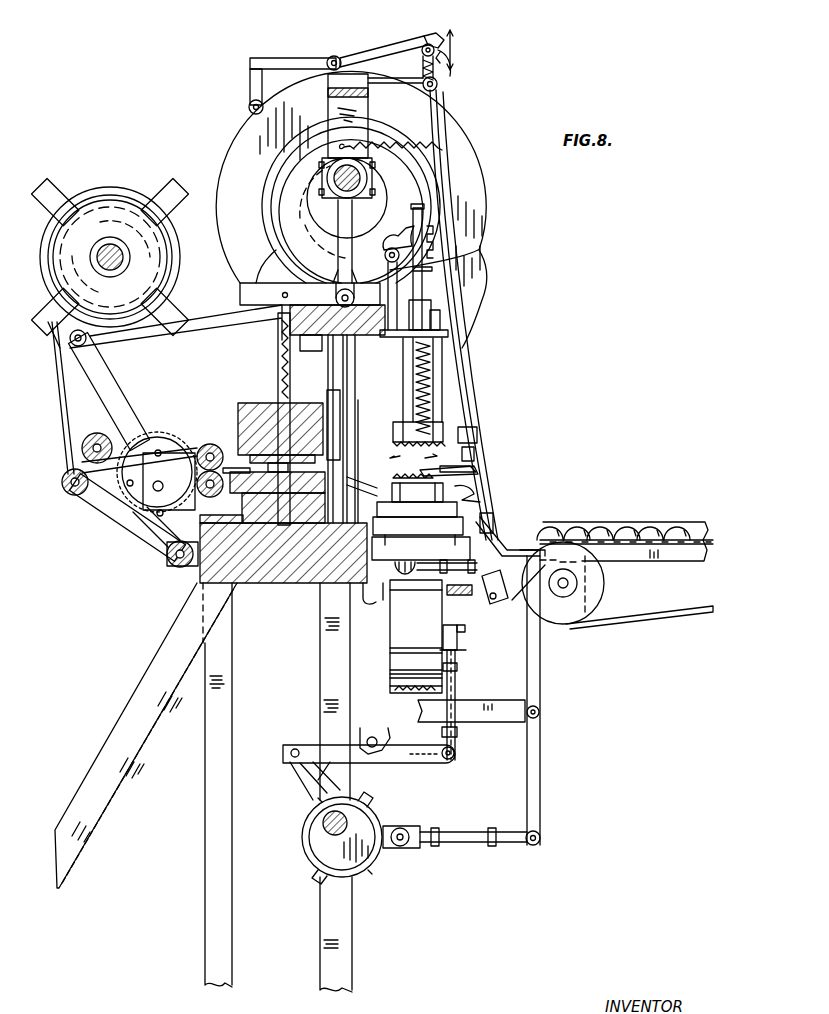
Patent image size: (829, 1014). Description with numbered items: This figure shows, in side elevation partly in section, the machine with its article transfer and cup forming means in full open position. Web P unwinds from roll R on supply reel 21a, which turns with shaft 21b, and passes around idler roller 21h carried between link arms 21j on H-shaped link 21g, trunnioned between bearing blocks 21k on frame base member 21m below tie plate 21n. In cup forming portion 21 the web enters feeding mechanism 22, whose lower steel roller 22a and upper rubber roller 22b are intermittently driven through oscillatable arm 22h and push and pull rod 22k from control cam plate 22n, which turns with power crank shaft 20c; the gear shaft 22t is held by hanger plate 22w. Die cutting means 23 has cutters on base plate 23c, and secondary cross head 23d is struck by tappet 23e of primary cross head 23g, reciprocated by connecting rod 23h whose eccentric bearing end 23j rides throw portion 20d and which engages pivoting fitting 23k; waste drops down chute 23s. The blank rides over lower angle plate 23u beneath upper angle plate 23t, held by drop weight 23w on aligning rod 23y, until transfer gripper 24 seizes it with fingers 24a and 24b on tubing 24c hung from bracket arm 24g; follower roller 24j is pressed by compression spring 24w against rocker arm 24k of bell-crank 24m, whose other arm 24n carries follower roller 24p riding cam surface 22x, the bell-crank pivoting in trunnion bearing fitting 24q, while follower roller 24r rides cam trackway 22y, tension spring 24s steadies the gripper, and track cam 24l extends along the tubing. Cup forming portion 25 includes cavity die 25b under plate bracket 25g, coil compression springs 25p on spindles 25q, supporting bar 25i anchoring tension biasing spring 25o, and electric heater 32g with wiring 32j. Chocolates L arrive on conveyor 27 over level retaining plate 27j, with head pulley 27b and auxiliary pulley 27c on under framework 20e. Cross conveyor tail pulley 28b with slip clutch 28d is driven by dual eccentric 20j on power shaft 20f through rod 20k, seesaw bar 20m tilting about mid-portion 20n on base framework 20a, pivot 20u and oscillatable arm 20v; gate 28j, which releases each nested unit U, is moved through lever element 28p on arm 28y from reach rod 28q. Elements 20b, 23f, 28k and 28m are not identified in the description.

The base framework 20a is at (322, 704).
The pivot bracket 20b is at (168, 572).
The power crank shaft 20c is at (300, 223).
The throw portion 20d is at (340, 176).
The under framework members 20e is at (476, 634).
The power shaft 20f is at (322, 819).
The dual acting eccentric 20j is at (356, 870).
The upward extending rod 20k is at (308, 795).
The seesaw bar 20m is at (422, 764).
The mid-portion of seesaw bar 20n is at (376, 740).
The pivotal connection 20u is at (458, 758).
The length adjustable oscillatable arm 20v is at (458, 688).
The cup forming portion 21 is at (223, 305).
The supply reel 21a is at (48, 336).
The laterally adjustable shaft 21b is at (120, 250).
The H-shaped link 21g is at (164, 552).
The idler roller 21h is at (332, 122).
The link arms 21j is at (60, 470).
The bearing blocks 21k is at (88, 440).
The frame base member 21m is at (286, 566).
The tie plate 21n is at (234, 291).
The feeding mechanism 22 is at (198, 424).
The lower steel roller 22a is at (198, 508).
The upper rubber roller 22b is at (237, 464).
The oscillatable arm 22h is at (62, 372).
The push and pull rod 22k is at (204, 338).
The control cam plate 22n is at (470, 156).
The gear shaft 22t is at (170, 479).
The hanger plate 22w is at (118, 538).
The cam surface 22x is at (240, 146).
The cam trackway 22y is at (405, 140).
The web die cutting means 23 is at (269, 436).
The base plate 23c is at (271, 785).
The secondary cross head 23d is at (330, 384).
The adjustable pressure tappet 23e is at (278, 348).
The cylinder 23f is at (398, 434).
The primary cross head 23g is at (312, 304).
The connecting rod 23h is at (392, 247).
The eccentric bearing end 23j is at (374, 176).
The pivoting fitting 23k is at (272, 250).
The chute 23s is at (122, 780).
The upper angle plate 23t is at (358, 382).
The lower angle plate 23u is at (400, 480).
The drop weight 23w is at (410, 420).
The aligning rod 23y is at (345, 366).
The intermediate transfer gripper 24 is at (451, 431).
The gripper finger 24a is at (478, 448).
The gripper finger 24b is at (480, 478).
The tubing 24c is at (449, 368).
The bracket arm 24g is at (430, 76).
The follower roller 24j is at (440, 68).
The rocker arm 24k is at (440, 22).
The track cam 24l is at (362, 88).
The bell-crank 24m is at (392, 36).
The rocker arm 24n is at (268, 66).
The follower roller 24p is at (244, 108).
The trunnion bearing fitting 24q is at (337, 56).
The follower roller 24r is at (464, 196).
The tension spring 24s is at (384, 138).
The compression spring 24w is at (445, 90).
The cup forming portion 25 is at (459, 343).
The cavity die 25b is at (482, 494).
The plate bracket 25g is at (442, 324).
The supporting bar 25i is at (460, 296).
The tension biasing spring 25o is at (436, 240).
The coil compression springs 25p is at (432, 404).
The spindles 25q is at (430, 358).
The conveyor 27 is at (695, 606).
The head pulley 27b is at (596, 606).
The auxiliary pulley 27c is at (503, 534).
The level retaining plate 27j is at (668, 553).
The tail pulley 28b is at (395, 660).
The adjustable slip clutch 28d is at (467, 642).
The gate 28j is at (551, 773).
The cylinder 28k is at (438, 580).
The block 28m is at (426, 553).
The lever element 28p is at (542, 692).
The reach rod 28q is at (487, 844).
The arm 28y is at (498, 720).
The electric heater 32g is at (412, 512).
The wiring 32j is at (418, 531).
The chocolate cherries L is at (654, 524).
The web P is at (56, 389).
The roll R is at (180, 234).
The unit U is at (370, 604).